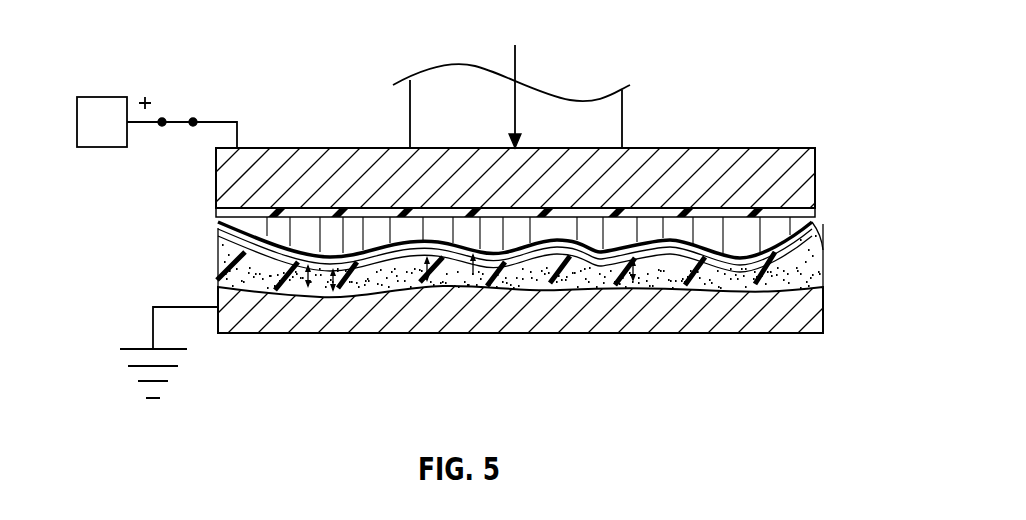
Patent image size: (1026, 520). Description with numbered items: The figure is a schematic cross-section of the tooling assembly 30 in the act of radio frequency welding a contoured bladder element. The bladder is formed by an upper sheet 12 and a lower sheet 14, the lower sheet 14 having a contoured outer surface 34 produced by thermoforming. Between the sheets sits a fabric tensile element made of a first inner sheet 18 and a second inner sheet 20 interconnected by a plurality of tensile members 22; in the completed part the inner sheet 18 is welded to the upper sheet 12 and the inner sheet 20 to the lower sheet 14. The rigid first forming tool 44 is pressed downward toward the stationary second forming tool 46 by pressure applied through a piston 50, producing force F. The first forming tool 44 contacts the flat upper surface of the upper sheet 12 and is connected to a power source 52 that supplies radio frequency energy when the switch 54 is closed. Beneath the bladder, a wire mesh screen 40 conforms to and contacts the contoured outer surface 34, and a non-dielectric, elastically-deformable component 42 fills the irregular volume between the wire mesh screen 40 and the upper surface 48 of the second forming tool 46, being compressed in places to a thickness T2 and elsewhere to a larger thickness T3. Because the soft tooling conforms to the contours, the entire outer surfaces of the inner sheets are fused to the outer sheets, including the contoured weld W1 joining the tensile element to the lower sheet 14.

The upper sheet 12 is at (750, 222).
The lower sheet 14 is at (811, 230).
The first inner sheet 18 is at (804, 208).
The second inner sheet 20 is at (718, 212).
The tensile members 22 is at (358, 232).
The tooling assembly 30 is at (521, 226).
The contoured outer surface 34 is at (300, 283).
The wire mesh screen 40 is at (220, 224).
The non-dielectric, elastically-deformable component 42 is at (227, 255).
The first forming tool 44 is at (213, 180).
The second forming tool 46 is at (768, 333).
The upper surface 48 is at (303, 283).
The piston 50 is at (622, 118).
The power source 52 is at (102, 108).
The switch 54 is at (176, 98).
The force F is at (515, 66).
The contoured weld W1 is at (335, 235).
The thickness T2 is at (343, 290).
The thickness T3 is at (473, 270).